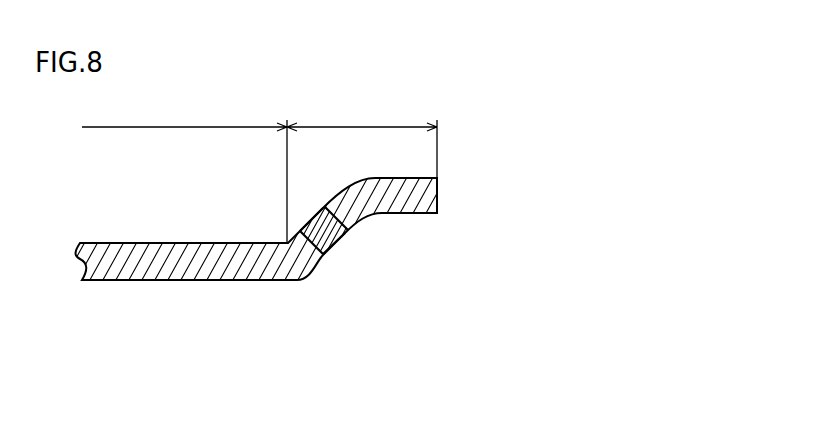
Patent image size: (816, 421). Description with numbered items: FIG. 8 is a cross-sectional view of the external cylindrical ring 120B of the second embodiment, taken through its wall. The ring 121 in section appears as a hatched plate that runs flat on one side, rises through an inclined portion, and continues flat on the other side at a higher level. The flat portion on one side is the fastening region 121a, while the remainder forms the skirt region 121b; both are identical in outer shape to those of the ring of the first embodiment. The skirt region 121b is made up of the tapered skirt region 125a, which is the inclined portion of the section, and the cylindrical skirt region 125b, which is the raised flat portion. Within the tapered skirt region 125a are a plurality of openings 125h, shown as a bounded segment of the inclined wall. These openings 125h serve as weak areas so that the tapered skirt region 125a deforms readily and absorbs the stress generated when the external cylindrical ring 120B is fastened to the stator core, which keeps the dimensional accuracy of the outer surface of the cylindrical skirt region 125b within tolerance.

The external cylindrical ring 120B is at (251, 276).
The plate portion 121 is at (188, 263).
The fastening region 121a is at (184, 173).
The skirt region 121b is at (362, 158).
The tapered skirt region 125a is at (357, 222).
The cylindrical skirt region 125b is at (415, 195).
The openings 125h is at (325, 235).